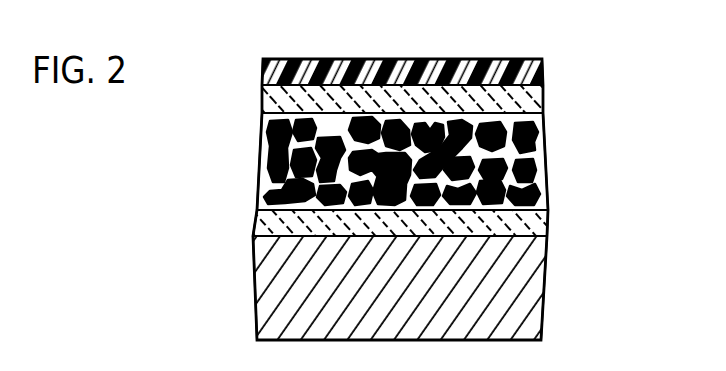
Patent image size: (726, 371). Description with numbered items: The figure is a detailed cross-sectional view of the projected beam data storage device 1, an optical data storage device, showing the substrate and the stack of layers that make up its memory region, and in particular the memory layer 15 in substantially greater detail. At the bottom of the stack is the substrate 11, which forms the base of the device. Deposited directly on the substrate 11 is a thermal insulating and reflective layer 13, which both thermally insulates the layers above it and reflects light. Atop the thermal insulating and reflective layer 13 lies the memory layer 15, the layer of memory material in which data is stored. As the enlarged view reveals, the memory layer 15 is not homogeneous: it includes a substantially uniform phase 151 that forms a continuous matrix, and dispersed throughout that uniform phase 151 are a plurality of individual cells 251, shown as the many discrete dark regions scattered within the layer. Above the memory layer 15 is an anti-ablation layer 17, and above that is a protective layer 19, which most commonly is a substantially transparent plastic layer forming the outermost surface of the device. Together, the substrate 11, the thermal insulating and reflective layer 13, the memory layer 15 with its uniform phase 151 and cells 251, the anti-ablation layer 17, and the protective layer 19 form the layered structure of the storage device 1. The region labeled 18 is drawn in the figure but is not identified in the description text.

The projected beam data storage device 1 is at (560, 41).
The substrate 11 is at (543, 286).
The thermal insulating and reflective layer 13 is at (543, 215).
The memory layer 15 is at (215, 118).
The substantially uniform phase 151 is at (375, 150).
The individual cells 251 is at (376, 178).
The anti-ablation layer 17 is at (543, 97).
The matrix / binder layer 18 is at (541, 150).
The protective layer 19 is at (543, 78).